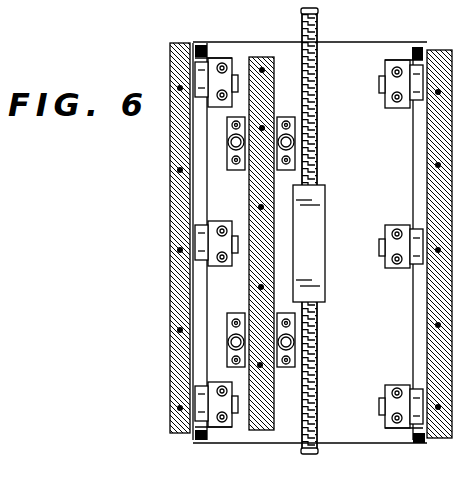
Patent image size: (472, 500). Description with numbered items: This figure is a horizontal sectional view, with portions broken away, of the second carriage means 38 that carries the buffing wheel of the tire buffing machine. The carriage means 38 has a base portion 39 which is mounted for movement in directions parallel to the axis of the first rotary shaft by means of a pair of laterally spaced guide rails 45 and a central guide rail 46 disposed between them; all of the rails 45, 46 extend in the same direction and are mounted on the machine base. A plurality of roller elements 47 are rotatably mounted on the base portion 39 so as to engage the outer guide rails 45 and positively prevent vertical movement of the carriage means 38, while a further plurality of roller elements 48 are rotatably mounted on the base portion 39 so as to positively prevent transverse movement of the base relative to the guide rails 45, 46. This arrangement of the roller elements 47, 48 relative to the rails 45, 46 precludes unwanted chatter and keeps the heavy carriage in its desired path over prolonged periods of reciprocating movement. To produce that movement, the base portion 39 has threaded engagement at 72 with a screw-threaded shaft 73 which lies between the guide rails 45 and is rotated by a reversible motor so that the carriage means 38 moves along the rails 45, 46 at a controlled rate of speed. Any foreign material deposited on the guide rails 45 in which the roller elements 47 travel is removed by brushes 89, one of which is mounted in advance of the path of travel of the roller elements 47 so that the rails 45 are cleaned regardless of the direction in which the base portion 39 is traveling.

The second carriage means 38 is at (140, 201).
The base portion 39 is at (390, 27).
The guide rails 45 is at (170, 146).
The guide rail 46 is at (263, 62).
The roller elements 47 is at (197, 73).
The roller elements 48 is at (231, 148).
The threaded engagement 72 is at (316, 232).
The screw-threaded shaft 73 is at (318, 407).
The brushes 89 is at (207, 45).